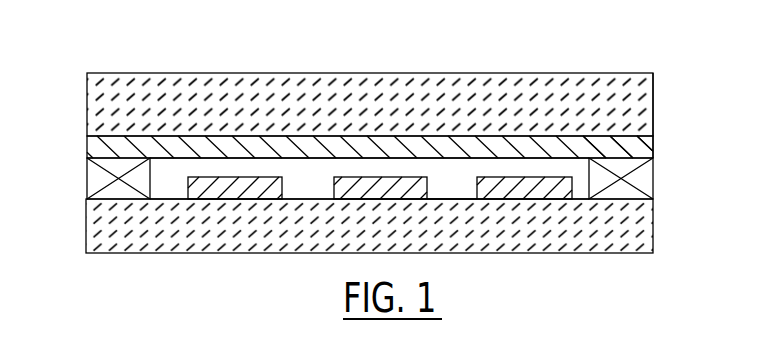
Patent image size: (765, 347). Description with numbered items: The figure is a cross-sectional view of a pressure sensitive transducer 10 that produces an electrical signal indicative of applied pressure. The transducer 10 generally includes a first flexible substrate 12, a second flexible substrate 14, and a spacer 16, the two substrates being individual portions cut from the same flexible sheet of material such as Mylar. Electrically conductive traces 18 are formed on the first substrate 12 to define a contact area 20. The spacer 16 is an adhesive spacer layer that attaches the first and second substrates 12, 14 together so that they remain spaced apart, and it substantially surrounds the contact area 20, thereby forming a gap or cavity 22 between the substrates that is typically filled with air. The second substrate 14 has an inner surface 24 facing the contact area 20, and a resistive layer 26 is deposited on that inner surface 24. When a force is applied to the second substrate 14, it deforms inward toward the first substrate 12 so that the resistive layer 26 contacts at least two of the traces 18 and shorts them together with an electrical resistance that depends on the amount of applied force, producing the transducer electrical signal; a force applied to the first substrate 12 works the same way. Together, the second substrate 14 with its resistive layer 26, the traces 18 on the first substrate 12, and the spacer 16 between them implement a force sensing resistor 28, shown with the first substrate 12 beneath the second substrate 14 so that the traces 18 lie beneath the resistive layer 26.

The pressure sensitive transducer 10 is at (622, 47).
The first flexible substrate 12 is at (653, 224).
The second flexible substrate 14 is at (98, 103).
The spacer 16 is at (97, 177).
The electrically conductive traces 18 is at (363, 186).
The contact area 20 is at (307, 188).
The cavity 22 is at (462, 186).
The inner surface 24 is at (412, 144).
The resistive layer 26 is at (636, 148).
The force sensing resistor 28 is at (655, 120).